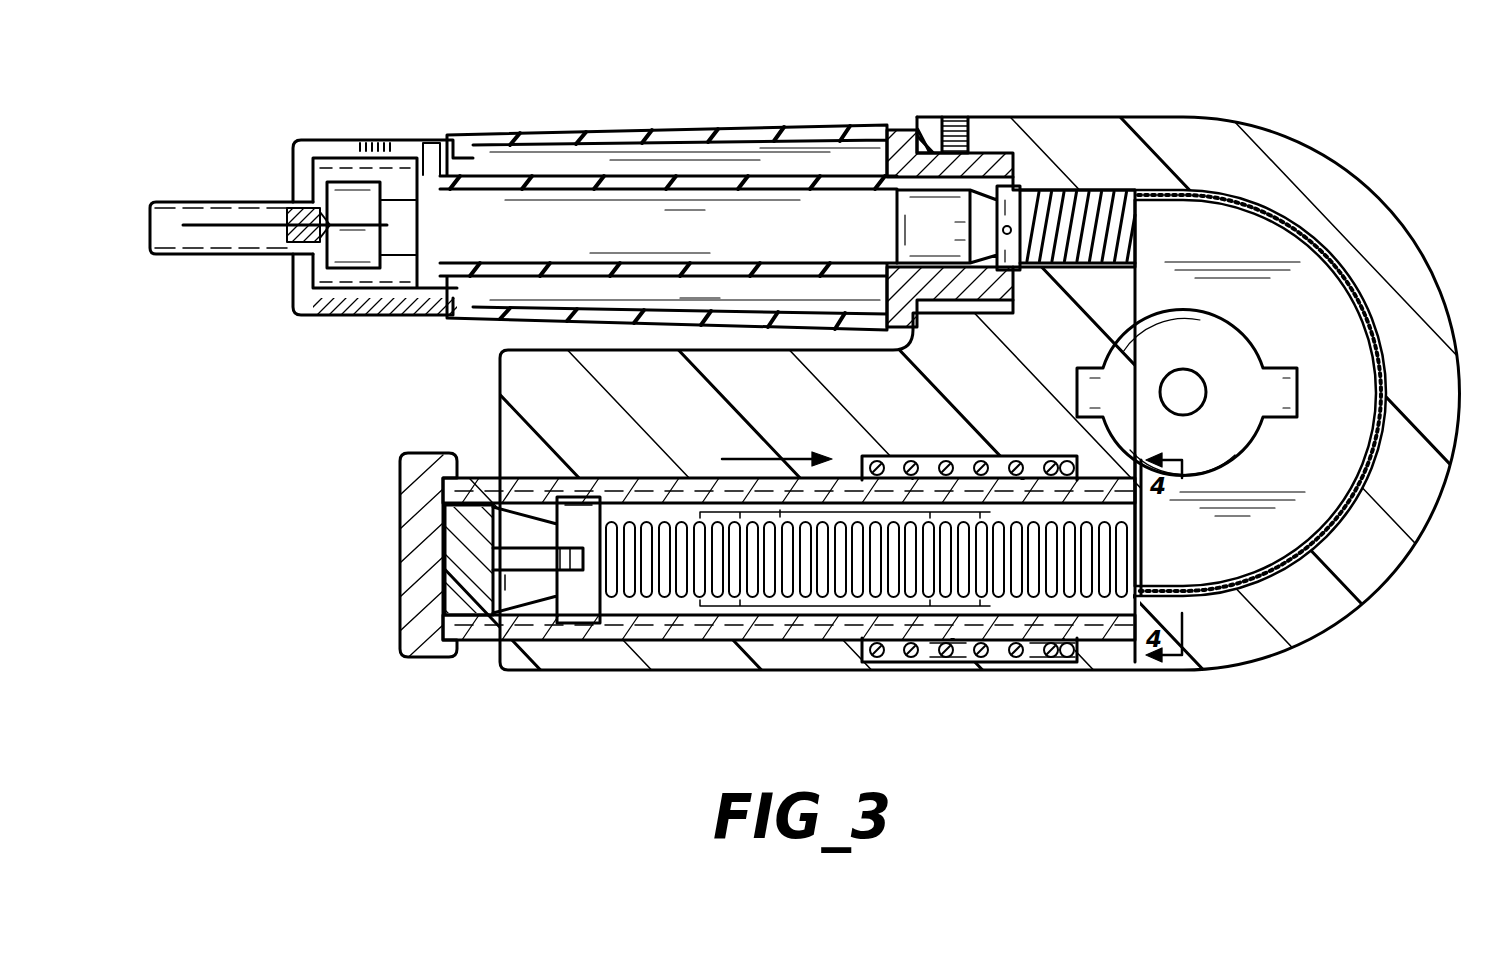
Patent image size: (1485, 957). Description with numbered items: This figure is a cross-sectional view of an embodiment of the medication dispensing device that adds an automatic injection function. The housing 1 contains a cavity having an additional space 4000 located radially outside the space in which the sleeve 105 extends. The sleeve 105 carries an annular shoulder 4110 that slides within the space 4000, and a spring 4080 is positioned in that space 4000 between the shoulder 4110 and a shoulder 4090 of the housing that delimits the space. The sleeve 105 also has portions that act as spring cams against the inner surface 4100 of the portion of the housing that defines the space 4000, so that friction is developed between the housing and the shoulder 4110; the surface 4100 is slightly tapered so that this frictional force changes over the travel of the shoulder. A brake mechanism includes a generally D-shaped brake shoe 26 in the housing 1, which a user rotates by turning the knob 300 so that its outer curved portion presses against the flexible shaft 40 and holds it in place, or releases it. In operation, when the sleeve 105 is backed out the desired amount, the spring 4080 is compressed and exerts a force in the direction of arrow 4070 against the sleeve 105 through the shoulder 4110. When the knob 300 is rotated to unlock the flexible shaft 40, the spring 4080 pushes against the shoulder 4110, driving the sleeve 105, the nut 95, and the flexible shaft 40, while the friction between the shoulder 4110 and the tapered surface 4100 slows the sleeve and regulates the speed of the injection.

The housing 1 is at (1245, 638).
The brake shoe 26 is at (1192, 232).
The knob 300 is at (1215, 356).
The flexible shaft 40 is at (1090, 182).
The nut 95 is at (520, 525).
The arrow 4070 is at (742, 457).
The sleeve 105 is at (633, 642).
The spring 4080 is at (900, 455).
The shoulder of the housing 4090 is at (866, 653).
The inner surface 4100 is at (938, 656).
The additional space 4000 is at (1046, 658).
The annular shoulder 4110 is at (1137, 650).